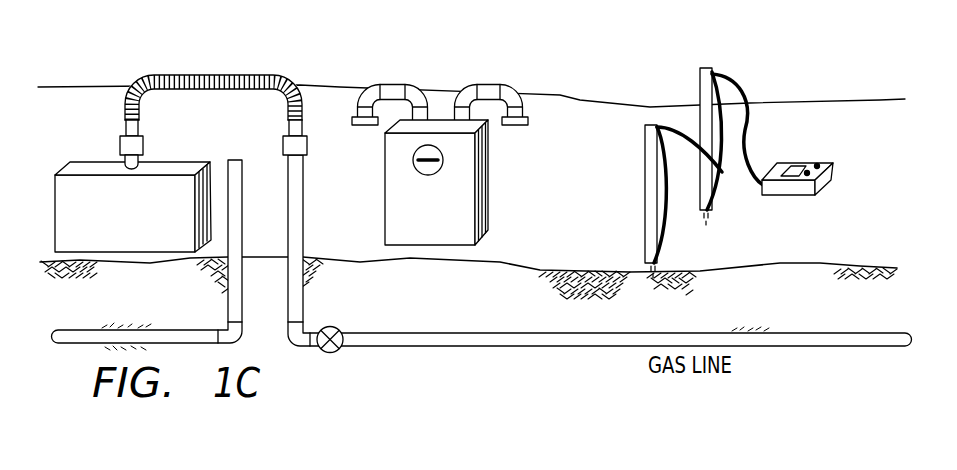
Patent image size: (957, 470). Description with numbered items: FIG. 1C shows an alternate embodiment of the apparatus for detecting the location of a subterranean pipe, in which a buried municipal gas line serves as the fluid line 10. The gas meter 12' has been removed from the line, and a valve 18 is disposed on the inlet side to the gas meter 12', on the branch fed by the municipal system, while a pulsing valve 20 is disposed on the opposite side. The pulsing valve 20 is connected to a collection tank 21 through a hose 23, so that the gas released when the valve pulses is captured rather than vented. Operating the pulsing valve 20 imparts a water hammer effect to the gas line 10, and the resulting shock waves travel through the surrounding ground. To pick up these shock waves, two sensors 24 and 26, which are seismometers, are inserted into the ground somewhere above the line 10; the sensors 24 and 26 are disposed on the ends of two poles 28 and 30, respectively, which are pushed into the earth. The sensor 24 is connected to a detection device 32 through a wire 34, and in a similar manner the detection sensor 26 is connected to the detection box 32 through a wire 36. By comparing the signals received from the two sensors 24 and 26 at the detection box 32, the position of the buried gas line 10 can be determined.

The gas line 10 is at (447, 348).
The gas meter 12' is at (446, 165).
The valve 18 is at (330, 352).
The pulsing valve 20 is at (283, 145).
The collection tank 21 is at (98, 160).
The hose 23 is at (205, 80).
The sensor 24 is at (652, 272).
The detection sensor 26 is at (706, 219).
The pole 28 is at (645, 162).
The pole 30 is at (713, 72).
The detection device 32 is at (832, 172).
The wire 34 is at (677, 130).
The wire 36 is at (750, 120).